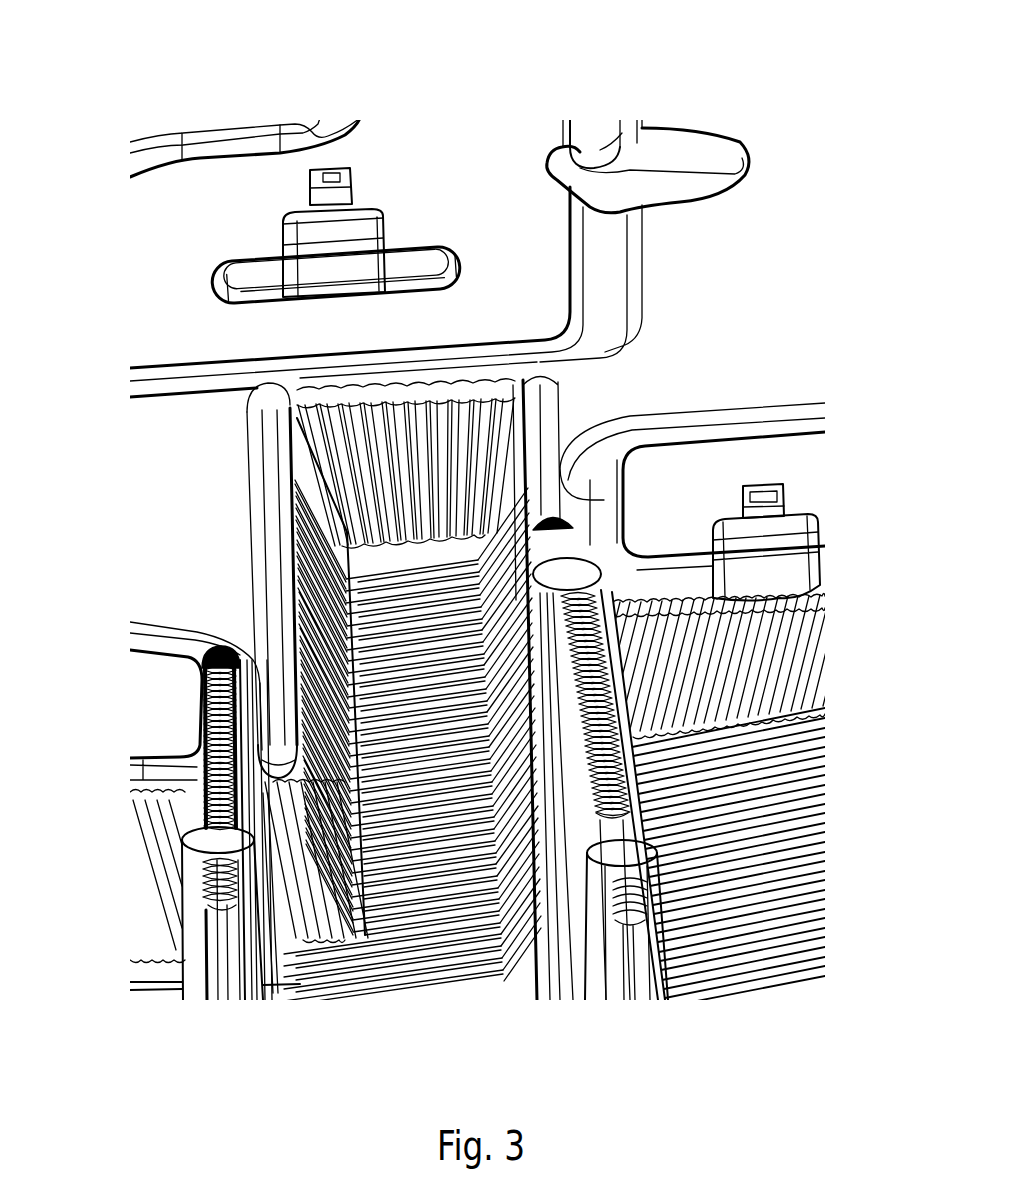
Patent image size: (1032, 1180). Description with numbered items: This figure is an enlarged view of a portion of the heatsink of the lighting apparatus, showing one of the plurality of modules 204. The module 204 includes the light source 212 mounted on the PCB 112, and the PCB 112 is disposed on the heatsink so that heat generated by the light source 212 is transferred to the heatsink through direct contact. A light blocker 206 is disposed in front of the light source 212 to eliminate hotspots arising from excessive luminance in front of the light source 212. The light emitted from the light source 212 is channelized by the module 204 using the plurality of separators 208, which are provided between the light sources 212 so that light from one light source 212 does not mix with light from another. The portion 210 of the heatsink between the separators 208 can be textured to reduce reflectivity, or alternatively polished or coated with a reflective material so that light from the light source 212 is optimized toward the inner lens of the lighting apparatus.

The PCB 112 is at (227, 183).
The module 204 is at (126, 106).
The light blocker 206 is at (268, 240).
The separator 208 is at (622, 689).
The portion of the heatsink 210 is at (401, 925).
The light source 212 is at (368, 176).